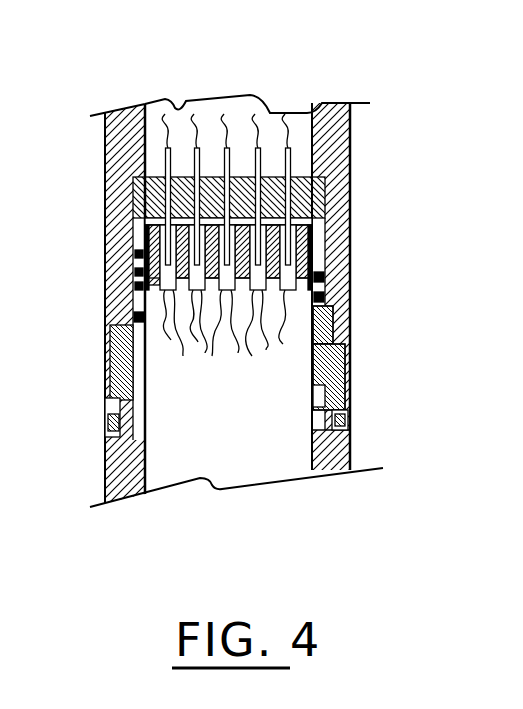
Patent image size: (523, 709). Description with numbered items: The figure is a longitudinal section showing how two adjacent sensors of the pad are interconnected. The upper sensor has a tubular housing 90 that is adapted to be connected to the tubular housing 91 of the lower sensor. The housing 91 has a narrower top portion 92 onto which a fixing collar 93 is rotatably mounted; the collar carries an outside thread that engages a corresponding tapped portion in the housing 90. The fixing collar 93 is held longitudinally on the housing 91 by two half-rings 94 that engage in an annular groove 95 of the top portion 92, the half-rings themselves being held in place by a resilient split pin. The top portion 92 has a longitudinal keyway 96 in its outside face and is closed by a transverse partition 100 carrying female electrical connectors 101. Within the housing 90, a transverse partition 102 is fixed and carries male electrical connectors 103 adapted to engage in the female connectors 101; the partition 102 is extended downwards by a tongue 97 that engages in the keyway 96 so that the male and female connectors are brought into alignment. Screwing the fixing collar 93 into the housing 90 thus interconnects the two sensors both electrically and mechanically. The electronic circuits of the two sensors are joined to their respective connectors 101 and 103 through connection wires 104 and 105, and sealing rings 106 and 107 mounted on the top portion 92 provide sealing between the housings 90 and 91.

The tubular housing 90 is at (337, 123).
The tubular housing 91 is at (337, 453).
The top portion 92 is at (318, 396).
The fixing collar 93 is at (338, 371).
The half-rings 94 is at (334, 334).
The annular groove 95 is at (134, 318).
The longitudinal keyway 96 is at (134, 264).
The tongue 97 is at (150, 222).
The transverse partition 100 is at (302, 242).
The female electrical connectors 101 is at (201, 338).
The transverse partition 102 is at (308, 197).
The male electrical connectors 103 is at (142, 159).
The connection wires 104 is at (266, 338).
The connection wires 105 is at (172, 116).
The sealing ring 106 is at (326, 276).
The sealing ring 107 is at (327, 298).